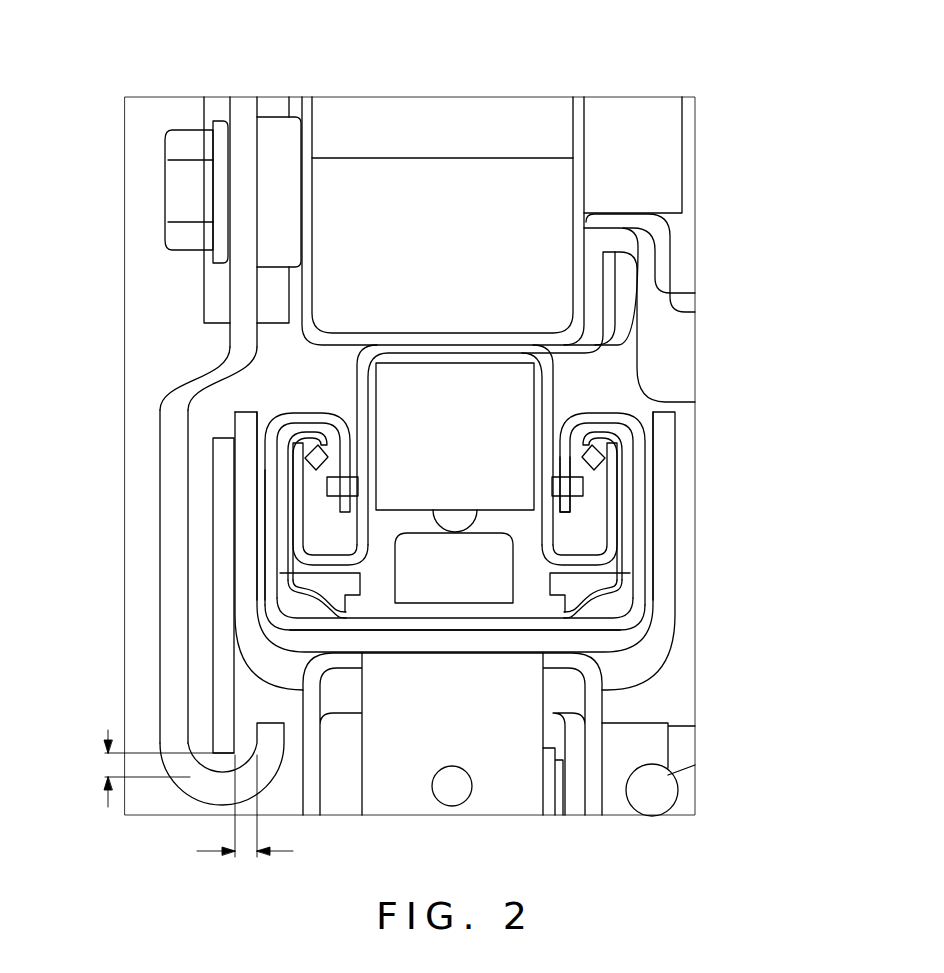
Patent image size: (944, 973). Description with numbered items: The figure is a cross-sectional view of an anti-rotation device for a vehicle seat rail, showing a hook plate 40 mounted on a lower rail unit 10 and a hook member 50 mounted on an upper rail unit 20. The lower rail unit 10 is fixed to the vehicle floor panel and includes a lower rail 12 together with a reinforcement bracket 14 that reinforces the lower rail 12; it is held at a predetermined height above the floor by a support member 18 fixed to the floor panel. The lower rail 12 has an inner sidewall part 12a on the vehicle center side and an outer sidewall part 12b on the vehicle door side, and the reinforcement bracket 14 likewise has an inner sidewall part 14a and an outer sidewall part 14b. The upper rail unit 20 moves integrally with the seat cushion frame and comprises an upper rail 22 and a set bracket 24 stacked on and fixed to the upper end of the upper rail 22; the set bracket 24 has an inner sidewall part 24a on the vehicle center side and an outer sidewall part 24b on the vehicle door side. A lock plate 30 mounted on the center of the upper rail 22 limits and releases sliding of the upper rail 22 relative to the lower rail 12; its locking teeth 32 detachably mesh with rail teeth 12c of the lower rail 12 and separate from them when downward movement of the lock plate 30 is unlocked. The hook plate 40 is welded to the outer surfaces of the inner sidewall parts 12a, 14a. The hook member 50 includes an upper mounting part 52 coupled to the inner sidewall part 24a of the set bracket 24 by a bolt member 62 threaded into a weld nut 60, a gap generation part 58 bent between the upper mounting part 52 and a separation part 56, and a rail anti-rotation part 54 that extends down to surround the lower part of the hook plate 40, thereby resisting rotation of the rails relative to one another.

The lower rail unit 10 is at (825, 481).
The lower rail 12 is at (677, 488).
The inner sidewall part of the lower rail 12a is at (263, 502).
The outer sidewall part of the lower rail 12b is at (655, 555).
The rail teeth 12c is at (616, 462).
The reinforcement bracket 14 is at (678, 513).
The inner sidewall part of the reinforcement bracket 14a is at (245, 575).
The outer sidewall part of the reinforcement bracket 14b is at (685, 598).
The support member 18 is at (603, 707).
The upper rail unit 20 is at (770, 336).
The upper rail 22 is at (558, 384).
The set bracket 24 is at (598, 287).
The inner sidewall part of the set bracket 24a is at (310, 228).
The outer sidewall part of the set bracket 24b is at (590, 205).
The lock plate 30 is at (324, 478).
The locking teeth 32 is at (612, 452).
The hook plate 40 is at (225, 700).
The hook member 50 is at (228, 300).
The upper mounting part 52 is at (245, 125).
The rail anti-rotation part 54 is at (190, 790).
The separation part 56 is at (165, 645).
The gap generation part 58 is at (215, 365).
The weld nut 60 is at (278, 130).
The bolt member 62 is at (188, 140).